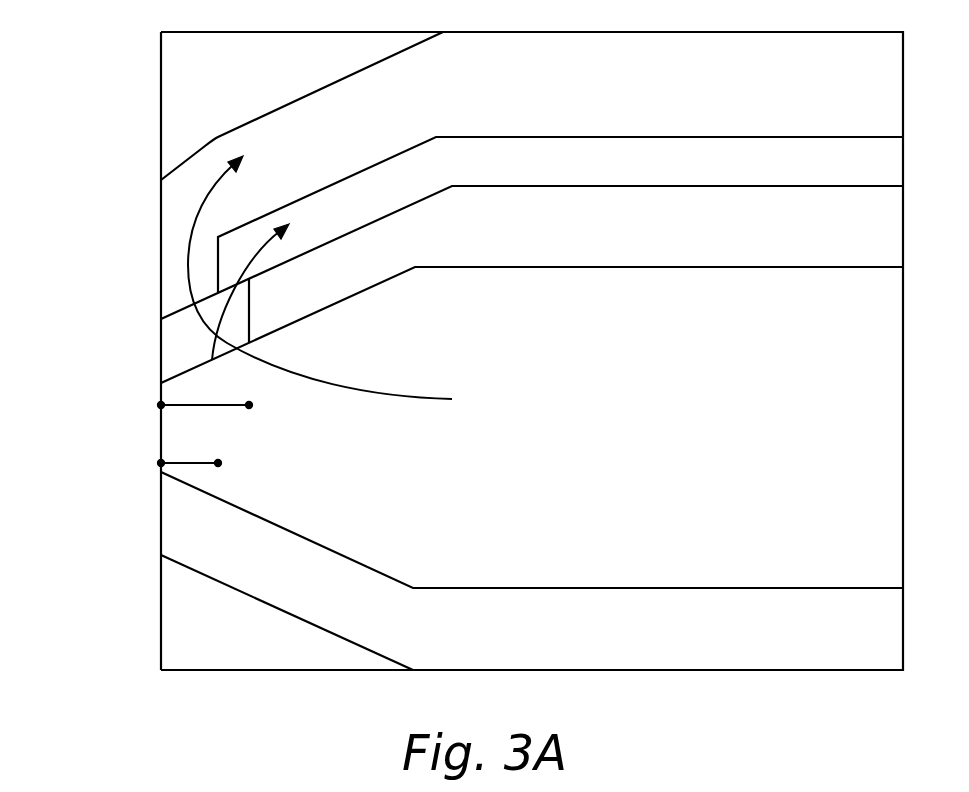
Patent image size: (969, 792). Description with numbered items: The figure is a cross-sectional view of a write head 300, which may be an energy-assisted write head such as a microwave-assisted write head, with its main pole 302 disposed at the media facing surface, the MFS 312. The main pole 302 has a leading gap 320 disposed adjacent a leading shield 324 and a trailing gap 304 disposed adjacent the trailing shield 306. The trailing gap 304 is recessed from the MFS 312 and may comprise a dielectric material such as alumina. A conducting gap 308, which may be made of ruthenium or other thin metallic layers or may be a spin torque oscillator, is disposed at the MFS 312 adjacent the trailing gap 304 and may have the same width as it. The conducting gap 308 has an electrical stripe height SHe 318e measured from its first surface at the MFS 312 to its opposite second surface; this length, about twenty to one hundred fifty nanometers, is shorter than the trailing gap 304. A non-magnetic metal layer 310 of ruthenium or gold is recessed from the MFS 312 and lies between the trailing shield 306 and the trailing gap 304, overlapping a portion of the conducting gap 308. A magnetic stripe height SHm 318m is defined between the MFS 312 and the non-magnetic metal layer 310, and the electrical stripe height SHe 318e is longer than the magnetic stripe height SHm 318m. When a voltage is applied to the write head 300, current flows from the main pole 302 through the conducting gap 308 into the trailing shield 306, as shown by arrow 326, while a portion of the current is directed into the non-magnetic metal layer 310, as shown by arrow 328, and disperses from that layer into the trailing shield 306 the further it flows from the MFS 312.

The write head 300 is at (127, 58).
The main pole 302 is at (860, 438).
The trailing gap 304 is at (860, 243).
The trailing shield 306 is at (860, 99).
The conducting gap 308 is at (170, 346).
The non-magnetic metal layer 310 is at (860, 178).
The MFS 312 is at (143, 466).
The electrical stripe height SHe 318e is at (205, 407).
The magnetic stripe height SHm 318m is at (190, 465).
The leading gap 320 is at (860, 644).
The leading shield 324 is at (235, 646).
The arrow 326 is at (195, 247).
The arrow 328 is at (258, 253).